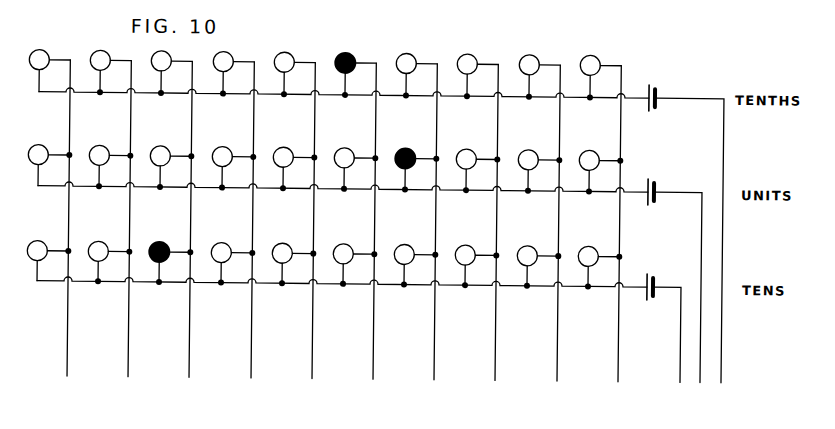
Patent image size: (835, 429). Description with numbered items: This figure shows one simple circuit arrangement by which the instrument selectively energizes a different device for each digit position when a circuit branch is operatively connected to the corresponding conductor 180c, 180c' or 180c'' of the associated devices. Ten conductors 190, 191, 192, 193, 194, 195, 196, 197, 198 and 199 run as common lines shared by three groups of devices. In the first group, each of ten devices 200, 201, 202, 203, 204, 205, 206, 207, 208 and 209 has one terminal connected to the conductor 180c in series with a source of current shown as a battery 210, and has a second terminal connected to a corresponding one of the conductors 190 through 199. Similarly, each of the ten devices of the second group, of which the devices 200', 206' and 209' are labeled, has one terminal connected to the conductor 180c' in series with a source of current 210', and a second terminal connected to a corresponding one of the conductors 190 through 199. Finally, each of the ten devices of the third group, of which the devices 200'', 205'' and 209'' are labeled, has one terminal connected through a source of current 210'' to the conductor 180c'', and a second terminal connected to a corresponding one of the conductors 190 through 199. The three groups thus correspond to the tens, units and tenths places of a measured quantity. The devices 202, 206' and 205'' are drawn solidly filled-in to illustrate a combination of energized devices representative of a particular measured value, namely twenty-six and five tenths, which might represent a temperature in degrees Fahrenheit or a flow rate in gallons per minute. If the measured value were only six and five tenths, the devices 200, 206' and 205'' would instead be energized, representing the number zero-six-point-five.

The conductor 180c is at (653, 335).
The conductor 180c' is at (709, 304).
The conductor 180c'' is at (727, 240).
The conductor 190 is at (70, 340).
The conductor 191 is at (131, 340).
The conductor 192 is at (192, 340).
The conductor 193 is at (254, 340).
The conductor 194 is at (315, 340).
The conductor 195 is at (376, 340).
The conductor 196 is at (437, 340).
The conductor 197 is at (498, 340).
The conductor 198 is at (560, 340).
The conductor 199 is at (621, 340).
The device 200 is at (45, 243).
The device 201 is at (100, 241).
The device 202 is at (161, 240).
The device 203 is at (223, 241).
The device 204 is at (284, 241).
The device 205 is at (351, 249).
The device 206 is at (412, 249).
The device 207 is at (467, 241).
The device 208 is at (529, 241).
The device 209 is at (596, 251).
The device 200' is at (45, 147).
The device 206' is at (413, 154).
The device 209' is at (597, 156).
The device 200'' is at (45, 50).
The device 205'' is at (352, 59).
The device 209'' is at (609, 62).
The battery 210 is at (670, 275).
The source of current 210' is at (671, 179).
The source of current 210'' is at (673, 81).